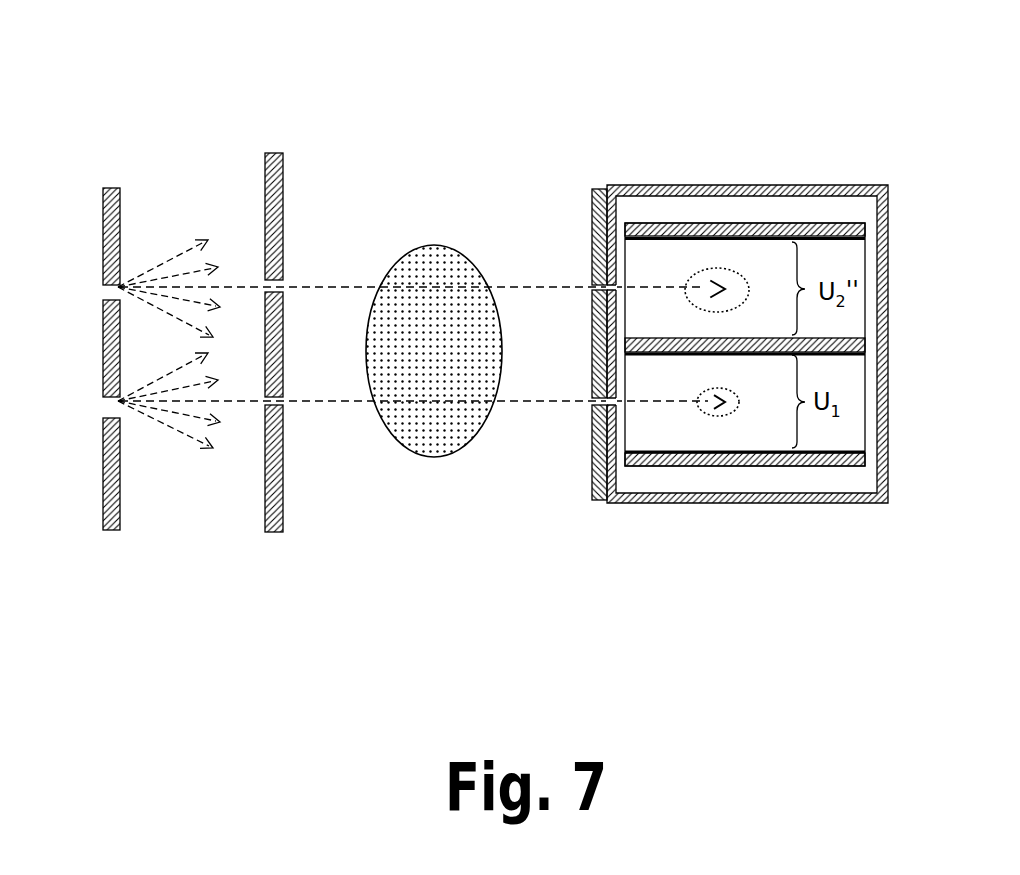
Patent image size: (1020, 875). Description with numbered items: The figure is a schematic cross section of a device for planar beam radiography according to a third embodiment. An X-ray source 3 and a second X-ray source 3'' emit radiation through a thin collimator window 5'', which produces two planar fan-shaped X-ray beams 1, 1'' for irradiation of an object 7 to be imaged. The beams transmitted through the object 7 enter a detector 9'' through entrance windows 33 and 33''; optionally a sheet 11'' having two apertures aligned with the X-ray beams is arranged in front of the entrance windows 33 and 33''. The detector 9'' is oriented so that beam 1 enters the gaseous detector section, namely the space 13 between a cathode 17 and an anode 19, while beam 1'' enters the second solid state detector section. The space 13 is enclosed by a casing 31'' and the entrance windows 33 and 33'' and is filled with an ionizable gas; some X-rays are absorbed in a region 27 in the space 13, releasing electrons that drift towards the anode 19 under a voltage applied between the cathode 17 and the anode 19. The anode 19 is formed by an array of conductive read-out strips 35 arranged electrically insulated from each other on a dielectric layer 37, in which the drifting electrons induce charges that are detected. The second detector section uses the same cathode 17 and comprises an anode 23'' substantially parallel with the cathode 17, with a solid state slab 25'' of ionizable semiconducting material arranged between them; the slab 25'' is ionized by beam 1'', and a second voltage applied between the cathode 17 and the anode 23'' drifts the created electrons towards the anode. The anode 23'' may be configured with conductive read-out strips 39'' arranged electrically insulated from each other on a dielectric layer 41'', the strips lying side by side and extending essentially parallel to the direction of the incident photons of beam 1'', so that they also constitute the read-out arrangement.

The planar X-ray beam 1 is at (329, 378).
The planar X-ray beam 1'' is at (358, 185).
The X-ray source 3 is at (86, 402).
The second X-ray source 3'' is at (188, 277).
The thin collimator window 5'' is at (320, 571).
The object 7 is at (445, 456).
The detector 9'' is at (513, 107).
The sheet 11'' is at (713, 336).
The space 13 is at (851, 467).
The cathode 17 is at (773, 337).
The anode 19 is at (641, 467).
The anode 23'' is at (598, 132).
The solid state slab 25'' is at (789, 193).
The region 27 is at (707, 416).
The casing 31'' is at (835, 101).
The entrance window 33 is at (552, 364).
The entrance window 33'' is at (513, 214).
The conductive read-out strips 35 is at (772, 467).
The dielectric layer 37 is at (728, 467).
The conductive read-out strips 39'' is at (753, 158).
The dielectric layer 41'' is at (745, 130).